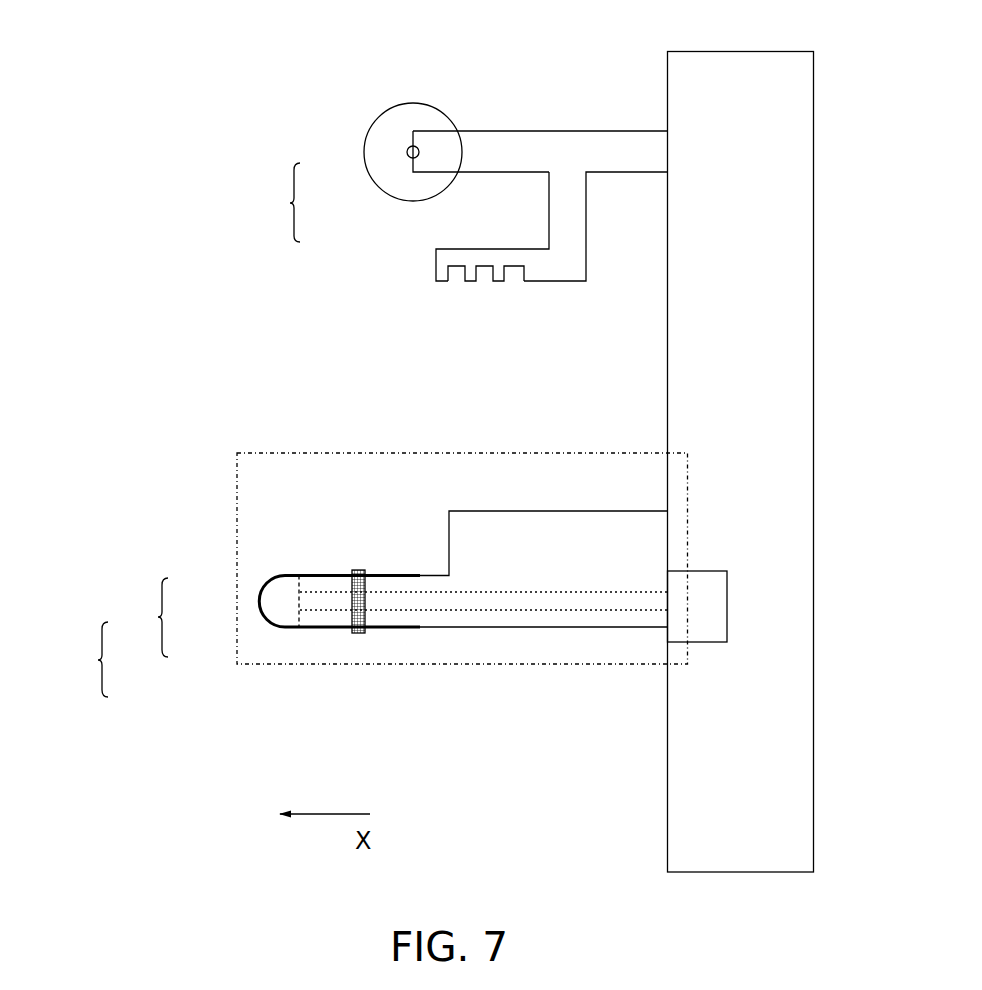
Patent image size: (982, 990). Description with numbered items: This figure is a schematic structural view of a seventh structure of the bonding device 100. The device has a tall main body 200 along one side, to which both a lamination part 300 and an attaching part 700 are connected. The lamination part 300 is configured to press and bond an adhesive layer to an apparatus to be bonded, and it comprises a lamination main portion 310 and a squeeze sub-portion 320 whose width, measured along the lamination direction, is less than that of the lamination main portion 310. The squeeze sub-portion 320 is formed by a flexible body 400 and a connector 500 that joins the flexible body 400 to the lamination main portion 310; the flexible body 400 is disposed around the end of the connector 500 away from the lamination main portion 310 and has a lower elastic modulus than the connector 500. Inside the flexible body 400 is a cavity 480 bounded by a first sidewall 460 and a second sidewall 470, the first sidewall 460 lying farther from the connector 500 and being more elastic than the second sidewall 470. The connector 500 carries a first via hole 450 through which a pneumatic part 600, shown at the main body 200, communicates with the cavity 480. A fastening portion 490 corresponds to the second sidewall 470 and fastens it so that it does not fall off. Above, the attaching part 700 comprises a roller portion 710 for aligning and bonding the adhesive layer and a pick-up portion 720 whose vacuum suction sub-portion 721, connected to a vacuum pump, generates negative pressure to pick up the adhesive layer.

The bonding device 100 is at (125, 50).
The main body 200 is at (798, 160).
The lamination part 300 is at (237, 453).
The lamination main portion 310 is at (565, 607).
The squeeze sub-portion 320 is at (360, 557).
The flexible body 400 is at (284, 535).
The first via hole 450 is at (512, 603).
The first sidewall 460 is at (262, 575).
The second sidewall 470 is at (327, 630).
The cavity 480 is at (270, 595).
The fastening portion 490 is at (361, 572).
The connector 500 is at (423, 618).
The pneumatic part 600 is at (712, 598).
The attaching part 700 is at (448, 214).
The roller portion 710 is at (390, 173).
The pick-up portion 720 is at (443, 257).
The vacuum suction sub-portion 721 is at (487, 270).